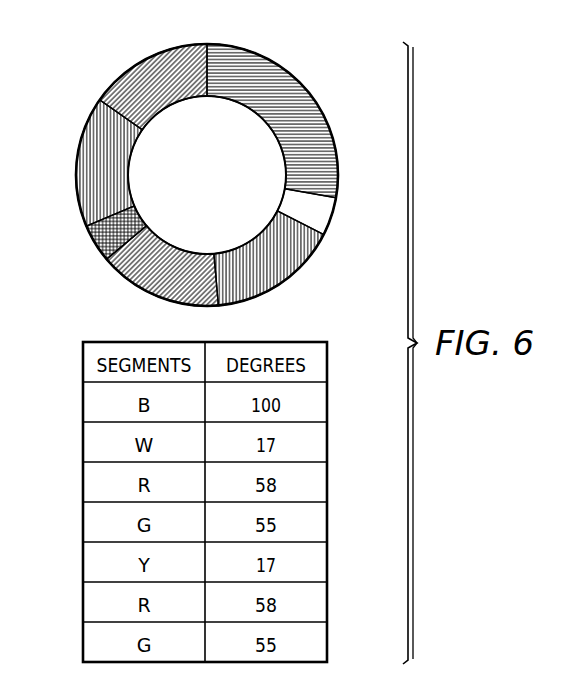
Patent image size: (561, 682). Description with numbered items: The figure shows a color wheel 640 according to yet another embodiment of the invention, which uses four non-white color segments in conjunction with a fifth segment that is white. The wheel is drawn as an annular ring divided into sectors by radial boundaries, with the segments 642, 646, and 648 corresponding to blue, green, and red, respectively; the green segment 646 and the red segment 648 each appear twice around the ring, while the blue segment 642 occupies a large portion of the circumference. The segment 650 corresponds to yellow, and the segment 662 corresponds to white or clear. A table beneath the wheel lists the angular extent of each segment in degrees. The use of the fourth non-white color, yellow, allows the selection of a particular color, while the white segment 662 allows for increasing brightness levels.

The color wheel 640 is at (204, 174).
The blue segment 642 is at (270, 70).
The green segment 646 is at (150, 65).
The red segment 648 is at (83, 190).
The yellow segment 650 is at (100, 242).
The white segment 662 is at (323, 211).